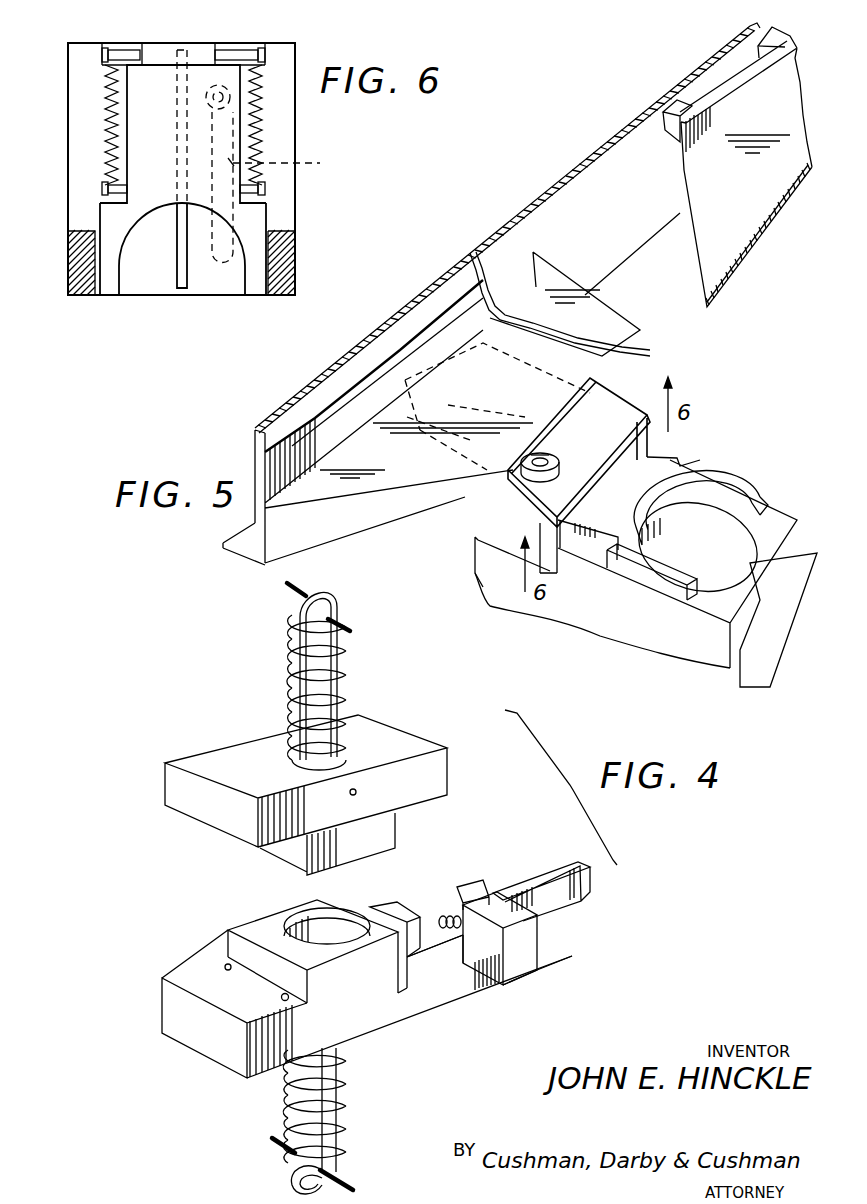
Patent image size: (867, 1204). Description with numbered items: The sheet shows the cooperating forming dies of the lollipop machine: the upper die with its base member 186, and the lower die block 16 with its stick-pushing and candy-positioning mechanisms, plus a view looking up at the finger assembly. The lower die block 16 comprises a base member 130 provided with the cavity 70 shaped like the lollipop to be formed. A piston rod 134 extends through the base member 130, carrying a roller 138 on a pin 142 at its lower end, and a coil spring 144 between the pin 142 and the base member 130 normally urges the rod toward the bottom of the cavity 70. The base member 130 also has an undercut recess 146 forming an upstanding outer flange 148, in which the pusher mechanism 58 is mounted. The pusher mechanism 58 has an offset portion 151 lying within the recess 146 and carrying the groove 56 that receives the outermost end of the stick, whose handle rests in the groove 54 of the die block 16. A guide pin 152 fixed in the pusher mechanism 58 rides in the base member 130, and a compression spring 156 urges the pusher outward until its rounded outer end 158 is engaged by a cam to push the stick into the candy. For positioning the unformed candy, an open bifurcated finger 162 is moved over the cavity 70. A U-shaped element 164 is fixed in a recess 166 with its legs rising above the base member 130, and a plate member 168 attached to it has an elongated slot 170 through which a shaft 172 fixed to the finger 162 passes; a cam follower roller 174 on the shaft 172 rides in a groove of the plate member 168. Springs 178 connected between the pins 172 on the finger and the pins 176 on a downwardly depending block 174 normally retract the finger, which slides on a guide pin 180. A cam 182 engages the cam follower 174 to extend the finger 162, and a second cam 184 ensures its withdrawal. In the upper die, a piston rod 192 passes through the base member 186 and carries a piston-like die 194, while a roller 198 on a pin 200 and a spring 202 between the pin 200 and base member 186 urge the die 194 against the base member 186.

In FIG. 5, the lower die block 16 is at (593, 627).
In FIG. 4, the lower die block 16 is at (538, 955).
In FIG. 4, the groove 54 is at (413, 907).
In FIG. 4, the groove 56 is at (492, 888).
In FIG. 4, the pusher mechanism 58 is at (581, 903).
In FIG. 5, the cavity 70 is at (732, 565).
In FIG. 4, the cavity 70 is at (332, 917).
In FIG. 5, the base member 130 is at (590, 628).
In FIG. 4, the base member 130 is at (460, 987).
In FIG. 4, the piston rod 134 is at (347, 1087).
In FIG. 4, the cam follower or roller 138 is at (293, 1178).
In FIG. 4, the pin 142 is at (345, 1173).
In FIG. 4, the coil spring 144 is at (347, 1127).
In FIG. 4, the undercut recess 146 is at (520, 967).
In FIG. 4, the upstanding outer flange 148 is at (538, 933).
In FIG. 4, the offset portion 151 is at (510, 887).
In FIG. 4, the guide pin 152 is at (450, 910).
In FIG. 4, the compression spring 156 is at (460, 947).
In FIG. 4, the outer end 158 is at (590, 870).
In FIG. 6, the open bifurcated finger 162 is at (112, 297).
In FIG. 5, the open bifurcated finger 162 is at (717, 470).
In FIG. 6, the U-shaped element 164 is at (295, 275).
In FIG. 5, the U-shaped element 164 is at (650, 443).
In FIG. 5, the recess 166 is at (490, 590).
In FIG. 4, the recess 166 is at (207, 973).
In FIG. 6, the plate member 168 is at (295, 195).
In FIG. 5, the plate member 168 is at (606, 397).
In FIG. 6, the elongated slot 170 is at (295, 162).
In FIG. 5, the elongated slot 170 is at (497, 406).
In FIG. 6, the shaft 172 is at (206, 100).
In FIG. 5, the shaft 172 is at (545, 455).
In FIG. 6, the cam follower roller 174 is at (222, 44).
In FIG. 5, the cam follower roller 174 is at (547, 458).
In FIG. 6, the pins 176 is at (102, 53).
In FIG. 6, the springs 178 is at (105, 116).
In FIG. 6, the pin 180 is at (178, 265).
In FIG. 5, the cam 182 is at (378, 480).
In FIG. 5, the second cam 184 is at (748, 267).
In FIG. 4, the base member 186 is at (447, 767).
In FIG. 4, the piston rod 192 is at (343, 697).
In FIG. 4, the piston-like die 194 is at (395, 828).
In FIG. 4, the roller or cam follower 198 is at (318, 590).
In FIG. 4, the pin 200 is at (352, 632).
In FIG. 4, the spring 202 is at (347, 677).